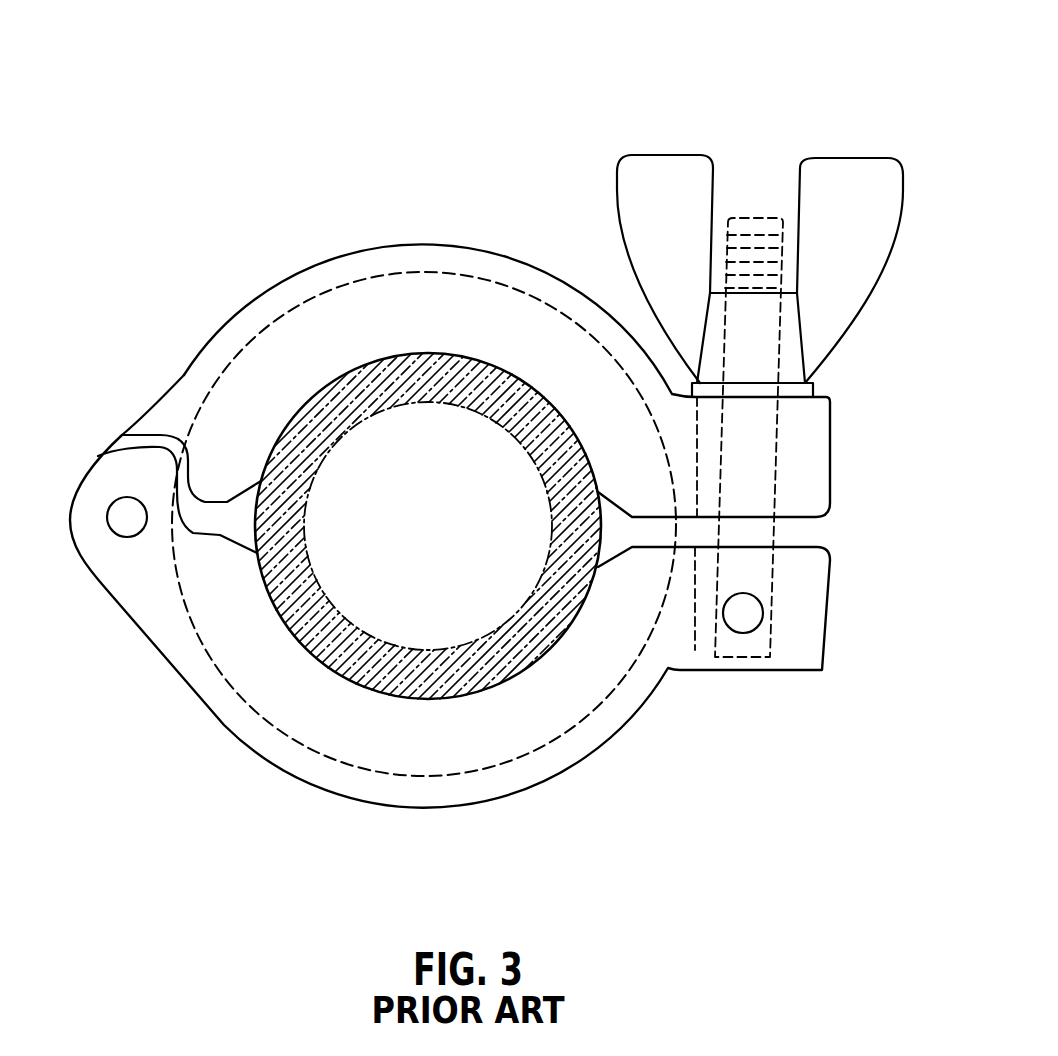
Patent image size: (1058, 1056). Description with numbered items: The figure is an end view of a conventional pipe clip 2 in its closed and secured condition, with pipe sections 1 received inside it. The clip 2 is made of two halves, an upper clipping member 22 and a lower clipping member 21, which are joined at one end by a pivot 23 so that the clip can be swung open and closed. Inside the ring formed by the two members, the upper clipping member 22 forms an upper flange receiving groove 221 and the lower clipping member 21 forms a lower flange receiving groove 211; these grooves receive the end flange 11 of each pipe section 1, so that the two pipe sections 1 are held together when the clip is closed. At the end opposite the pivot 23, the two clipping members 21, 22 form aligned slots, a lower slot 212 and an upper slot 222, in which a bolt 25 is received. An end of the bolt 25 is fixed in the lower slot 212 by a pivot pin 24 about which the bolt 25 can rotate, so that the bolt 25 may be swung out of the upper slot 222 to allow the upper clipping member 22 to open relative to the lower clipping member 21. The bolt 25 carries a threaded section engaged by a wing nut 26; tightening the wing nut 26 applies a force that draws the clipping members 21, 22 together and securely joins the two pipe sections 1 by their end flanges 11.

The pipe section 1 is at (360, 680).
The end flange 11 is at (234, 675).
The pipe clip 2 is at (486, 481).
The lower clipping member 21 is at (450, 679).
The lower flange receiving groove 211 is at (475, 767).
The lower slot 212 is at (694, 650).
The upper clipping member 22 is at (521, 326).
The upper flange receiving groove 221 is at (262, 343).
The upper slot 222 is at (697, 460).
The pivot 23 is at (127, 522).
The pivot pin 24 is at (743, 615).
The bolt 25 is at (752, 233).
The wing nut 26 is at (647, 218).